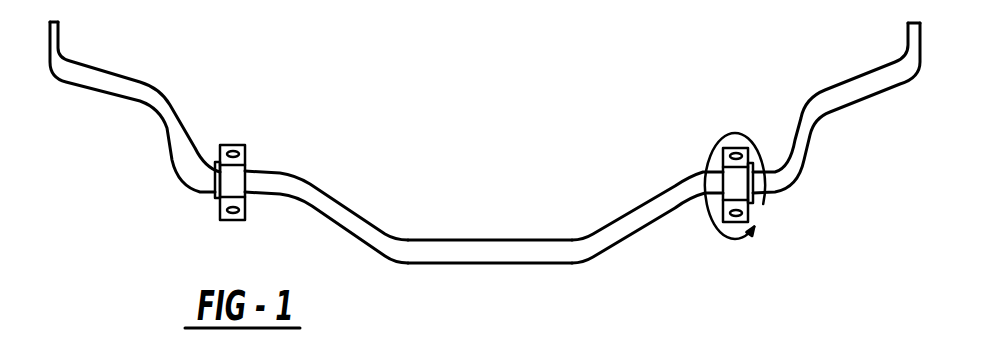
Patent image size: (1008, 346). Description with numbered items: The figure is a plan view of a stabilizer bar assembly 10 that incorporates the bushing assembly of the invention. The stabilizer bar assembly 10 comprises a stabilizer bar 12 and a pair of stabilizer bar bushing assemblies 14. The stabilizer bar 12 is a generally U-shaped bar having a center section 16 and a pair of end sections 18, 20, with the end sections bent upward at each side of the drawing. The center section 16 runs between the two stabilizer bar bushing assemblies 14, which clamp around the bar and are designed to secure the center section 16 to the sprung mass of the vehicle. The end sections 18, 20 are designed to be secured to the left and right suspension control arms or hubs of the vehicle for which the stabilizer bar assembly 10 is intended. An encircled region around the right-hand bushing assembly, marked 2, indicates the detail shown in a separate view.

The stabilizer bar assembly 10 is at (485, 173).
The stabilizer bar 12 is at (485, 173).
The mounting bracket / bushing 14 is at (233, 147).
The central portion of bar 16 is at (508, 250).
The right arm end 18 is at (867, 86).
The left arm end 20 is at (115, 88).
The FIG. 2 detail indicator 2 is at (741, 192).